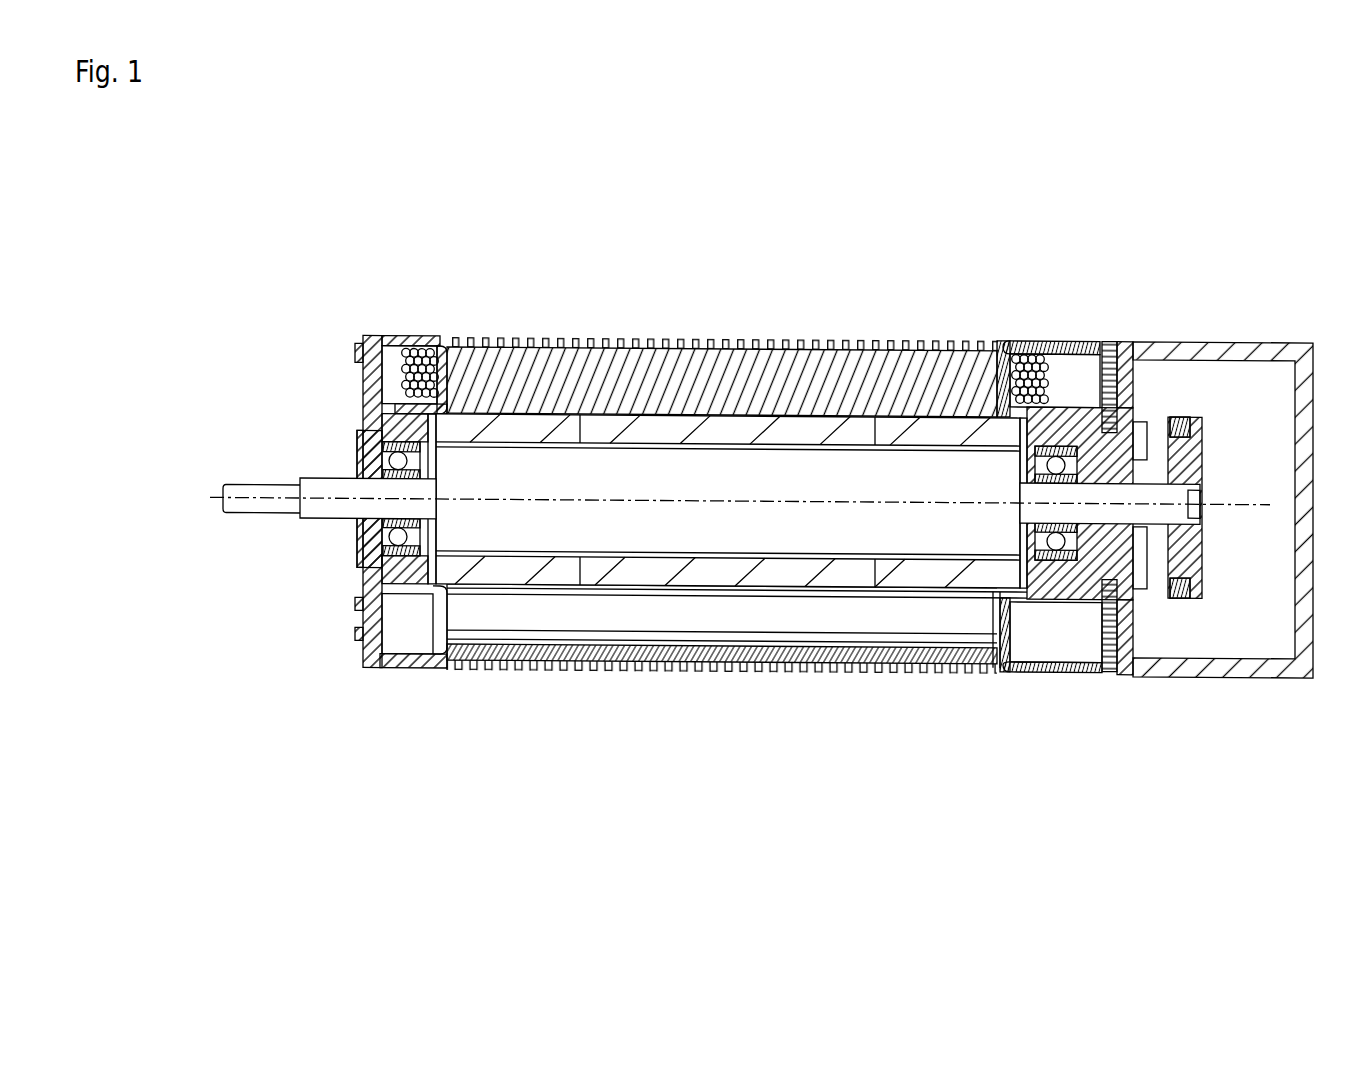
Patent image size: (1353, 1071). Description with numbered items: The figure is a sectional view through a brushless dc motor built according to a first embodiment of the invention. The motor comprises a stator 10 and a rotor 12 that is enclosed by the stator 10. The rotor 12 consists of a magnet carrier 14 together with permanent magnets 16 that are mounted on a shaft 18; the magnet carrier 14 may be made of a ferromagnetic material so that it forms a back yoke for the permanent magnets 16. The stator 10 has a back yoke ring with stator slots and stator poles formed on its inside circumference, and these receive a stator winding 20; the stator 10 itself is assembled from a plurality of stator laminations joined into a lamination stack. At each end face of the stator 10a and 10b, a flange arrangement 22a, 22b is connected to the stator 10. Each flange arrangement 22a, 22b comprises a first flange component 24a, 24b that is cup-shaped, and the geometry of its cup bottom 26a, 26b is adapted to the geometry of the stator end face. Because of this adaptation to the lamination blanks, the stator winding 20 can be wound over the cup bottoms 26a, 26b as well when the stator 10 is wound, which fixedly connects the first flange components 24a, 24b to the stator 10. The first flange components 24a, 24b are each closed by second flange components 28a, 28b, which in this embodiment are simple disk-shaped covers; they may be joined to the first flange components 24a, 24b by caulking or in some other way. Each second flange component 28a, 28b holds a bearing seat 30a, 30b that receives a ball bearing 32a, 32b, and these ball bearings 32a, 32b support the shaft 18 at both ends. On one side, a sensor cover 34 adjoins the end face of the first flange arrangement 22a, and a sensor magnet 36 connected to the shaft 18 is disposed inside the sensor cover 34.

The stator 10 is at (548, 622).
The end face of the stator 10a is at (1000, 673).
The end face of the stator 10b is at (443, 680).
The rotor 12 is at (631, 577).
The magnet carrier 14 is at (683, 517).
The permanent magnets 16 is at (762, 569).
The shaft 18 is at (315, 509).
The stator winding 20 is at (1023, 342).
The flange arrangement 22a is at (1055, 677).
The flange arrangement 22b is at (401, 672).
The first flange component 24a is at (1057, 342).
The first flange component 24b is at (428, 337).
The cup bottom 26a is at (962, 347).
The cup bottom 26b is at (452, 366).
The second flange component 28a is at (1113, 339).
The second flange component 28b is at (362, 425).
The bearing seat 30a is at (1060, 545).
The bearing seat 30b is at (382, 416).
The ball bearing 32a is at (1110, 634).
The ball bearing 32b is at (355, 432).
The sensor cover 34 is at (1280, 660).
The sensor magnet 36 is at (1210, 414).